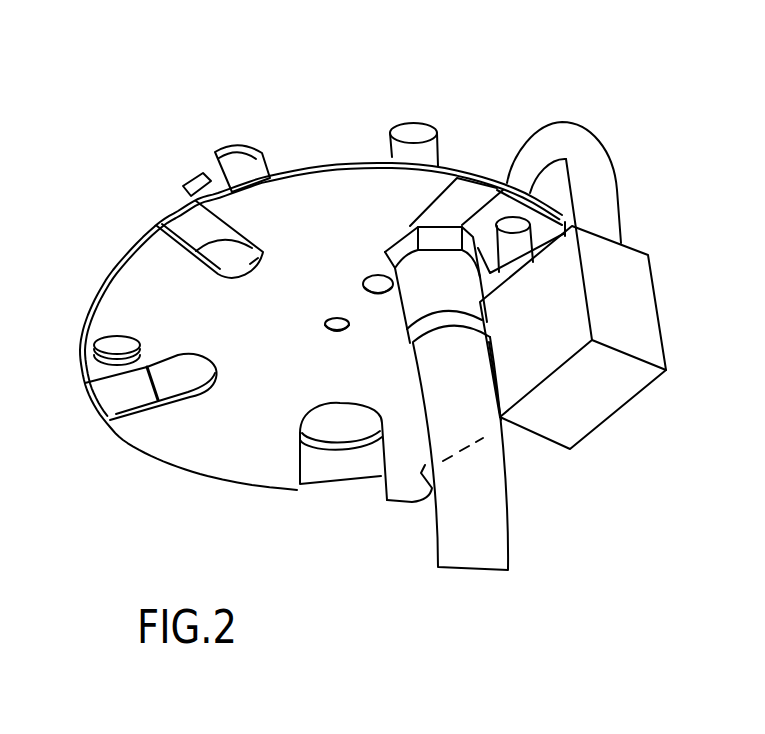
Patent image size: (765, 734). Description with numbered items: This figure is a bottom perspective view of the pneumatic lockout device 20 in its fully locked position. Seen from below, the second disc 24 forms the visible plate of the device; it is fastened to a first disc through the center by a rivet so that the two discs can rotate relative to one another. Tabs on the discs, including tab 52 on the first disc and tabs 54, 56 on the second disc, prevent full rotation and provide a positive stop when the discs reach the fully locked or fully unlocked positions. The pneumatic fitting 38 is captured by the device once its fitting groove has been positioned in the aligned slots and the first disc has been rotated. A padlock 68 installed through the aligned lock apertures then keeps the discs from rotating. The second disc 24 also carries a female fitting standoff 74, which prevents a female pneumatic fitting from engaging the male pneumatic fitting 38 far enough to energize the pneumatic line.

The pneumatic lockout device 20 is at (196, 142).
The second disc 24 is at (197, 455).
The pneumatic fitting 38 is at (434, 134).
The tab 52 is at (262, 148).
The tab 54 is at (410, 502).
The tab 56 is at (200, 192).
The padlock 68 is at (585, 148).
The female fitting standoff 74 is at (376, 272).